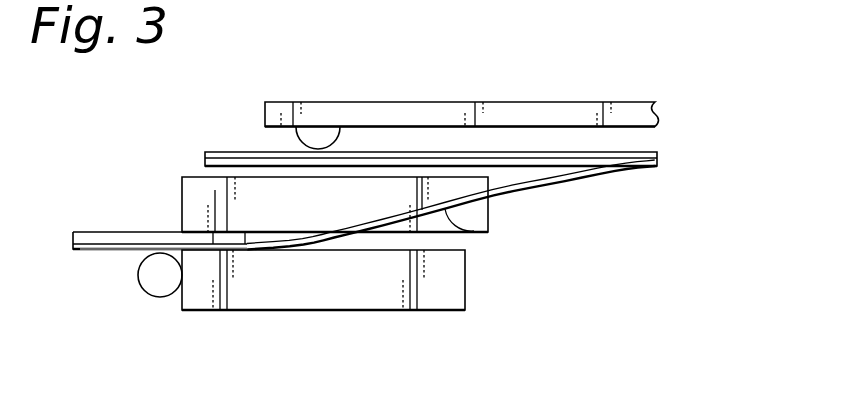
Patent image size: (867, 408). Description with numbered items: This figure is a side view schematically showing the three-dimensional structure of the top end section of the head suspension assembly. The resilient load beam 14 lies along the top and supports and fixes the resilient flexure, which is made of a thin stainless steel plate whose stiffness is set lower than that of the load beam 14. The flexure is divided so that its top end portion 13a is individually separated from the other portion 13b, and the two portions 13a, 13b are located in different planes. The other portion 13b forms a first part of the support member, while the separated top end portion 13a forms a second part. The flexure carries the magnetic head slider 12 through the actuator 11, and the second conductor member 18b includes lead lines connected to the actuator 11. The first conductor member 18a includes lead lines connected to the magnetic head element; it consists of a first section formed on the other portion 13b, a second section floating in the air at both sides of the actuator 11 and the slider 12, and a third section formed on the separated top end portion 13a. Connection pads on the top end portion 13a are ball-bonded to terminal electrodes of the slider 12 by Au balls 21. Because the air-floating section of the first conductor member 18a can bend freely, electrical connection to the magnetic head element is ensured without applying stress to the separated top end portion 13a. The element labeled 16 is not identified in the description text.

The actuator 11 is at (483, 211).
The slider 12 is at (373, 300).
The top end portion 13a is at (100, 242).
The other portion 13b is at (608, 150).
The load beam 14 is at (497, 102).
The roller 16 is at (310, 137).
The first conductor member 18a is at (104, 252).
The second conductor member 18b is at (523, 164).
The Au balls 21 is at (158, 277).